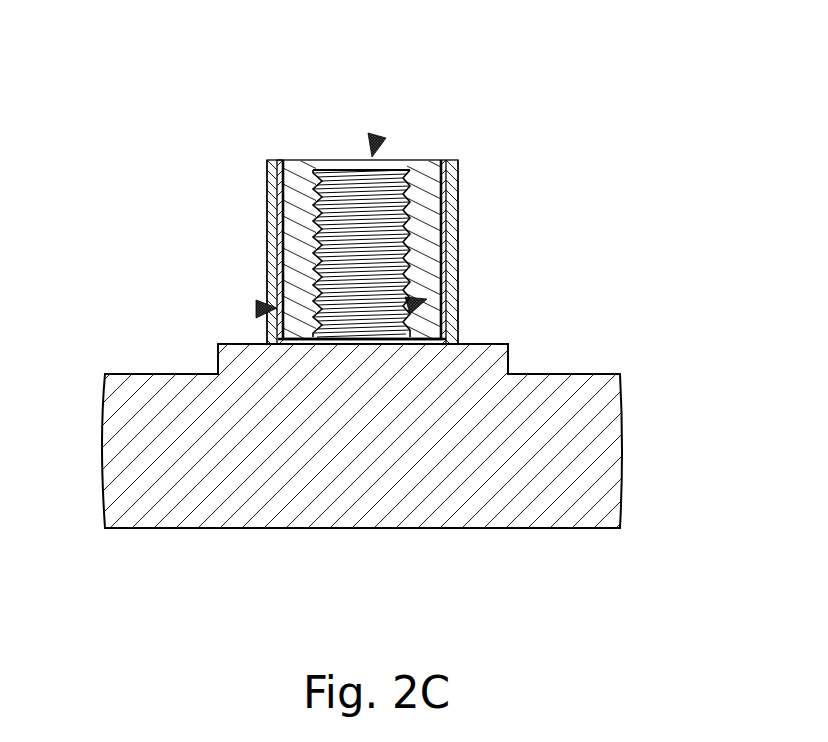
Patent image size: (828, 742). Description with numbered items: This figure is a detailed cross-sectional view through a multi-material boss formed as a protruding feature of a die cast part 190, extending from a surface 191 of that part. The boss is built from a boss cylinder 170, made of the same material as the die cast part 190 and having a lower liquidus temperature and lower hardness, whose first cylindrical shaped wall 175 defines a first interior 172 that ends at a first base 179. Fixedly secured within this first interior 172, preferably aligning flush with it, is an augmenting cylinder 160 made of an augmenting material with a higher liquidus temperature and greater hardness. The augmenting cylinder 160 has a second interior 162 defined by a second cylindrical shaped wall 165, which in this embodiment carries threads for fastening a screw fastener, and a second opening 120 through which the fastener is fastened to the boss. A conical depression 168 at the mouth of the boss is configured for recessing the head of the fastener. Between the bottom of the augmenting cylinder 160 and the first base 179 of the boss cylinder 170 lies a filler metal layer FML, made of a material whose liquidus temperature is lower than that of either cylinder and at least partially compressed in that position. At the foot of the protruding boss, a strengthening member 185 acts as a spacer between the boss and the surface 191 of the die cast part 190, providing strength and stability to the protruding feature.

The second opening 120 is at (385, 135).
The augmenting cylinder 160 is at (418, 216).
The second interior 162 is at (428, 300).
The second cylindrical shaped wall 165 is at (445, 240).
The conical depression 168 is at (410, 165).
The boss cylinder 170 is at (267, 212).
The first interior 172 is at (256, 308).
The first cylindrical shaped wall 175 is at (267, 267).
The first base 179 is at (367, 344).
The strengthening member 185 is at (217, 363).
The die cast part 190 is at (607, 445).
The surface 191 is at (148, 373).
The filler metal layer FML is at (287, 168).